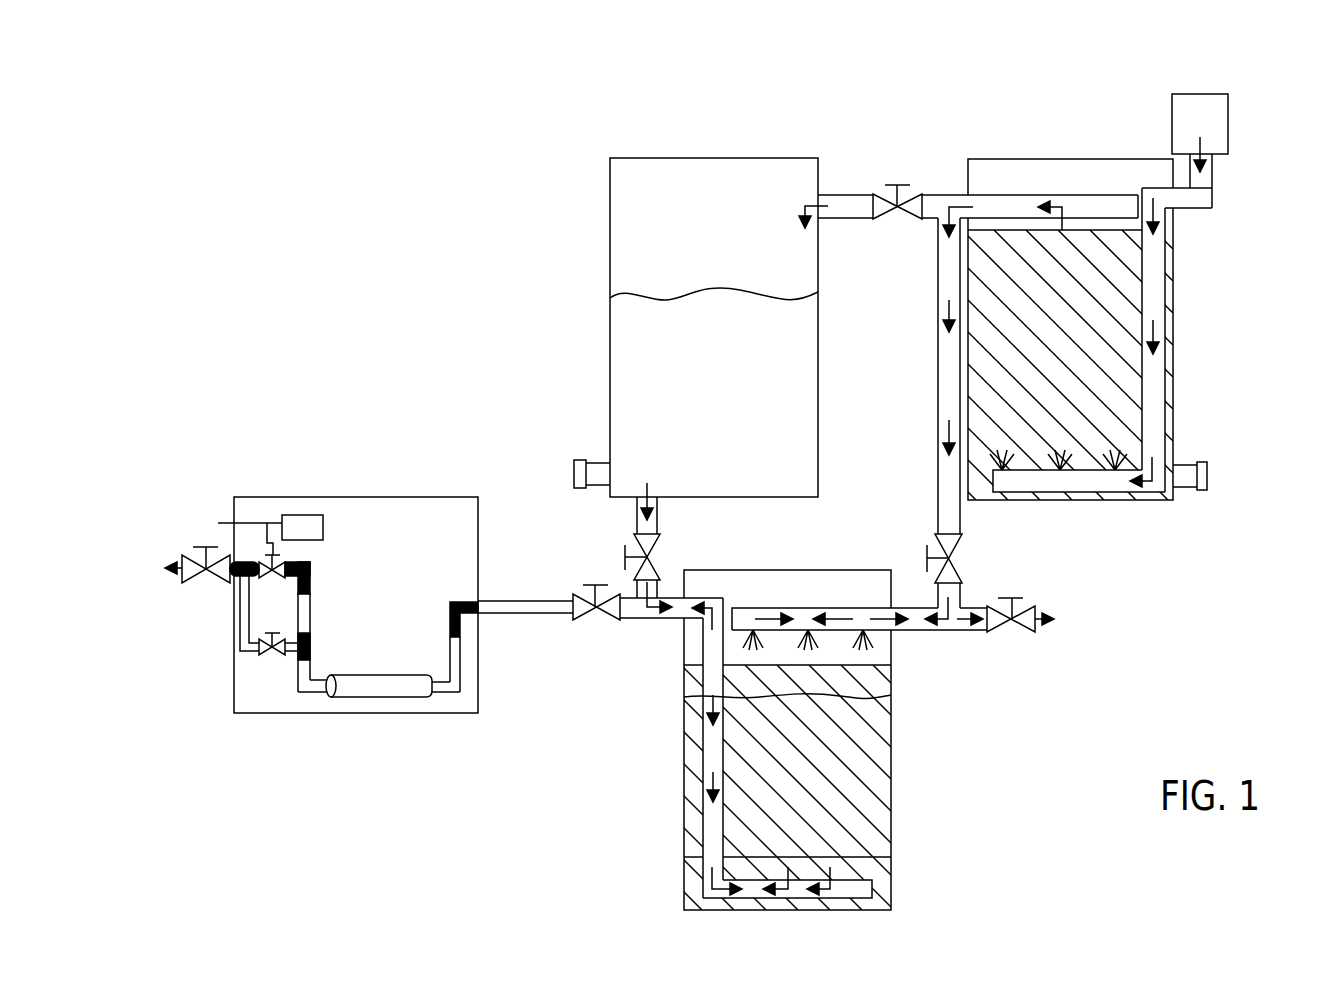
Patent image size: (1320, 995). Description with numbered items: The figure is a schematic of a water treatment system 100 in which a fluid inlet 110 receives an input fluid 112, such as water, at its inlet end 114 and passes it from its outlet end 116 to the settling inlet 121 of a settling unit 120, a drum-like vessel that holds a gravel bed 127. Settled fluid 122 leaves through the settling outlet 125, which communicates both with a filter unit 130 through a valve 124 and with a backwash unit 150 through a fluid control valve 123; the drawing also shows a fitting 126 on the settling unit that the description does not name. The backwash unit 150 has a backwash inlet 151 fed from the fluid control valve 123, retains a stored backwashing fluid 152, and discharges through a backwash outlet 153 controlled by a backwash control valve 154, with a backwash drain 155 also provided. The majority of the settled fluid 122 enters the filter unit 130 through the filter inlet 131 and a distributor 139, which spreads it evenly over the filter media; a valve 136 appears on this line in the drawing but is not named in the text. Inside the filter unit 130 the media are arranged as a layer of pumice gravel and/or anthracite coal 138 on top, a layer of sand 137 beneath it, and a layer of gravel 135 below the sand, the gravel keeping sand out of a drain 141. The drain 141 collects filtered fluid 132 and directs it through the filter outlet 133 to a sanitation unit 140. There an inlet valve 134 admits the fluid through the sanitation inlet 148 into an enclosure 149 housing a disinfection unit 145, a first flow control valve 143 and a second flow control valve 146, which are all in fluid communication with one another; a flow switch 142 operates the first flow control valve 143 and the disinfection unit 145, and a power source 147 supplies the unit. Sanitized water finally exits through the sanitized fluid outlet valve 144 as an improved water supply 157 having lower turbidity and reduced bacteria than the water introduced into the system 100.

The water treatment system 100 is at (386, 254).
The fluid inlet 110 is at (1202, 93).
The input fluid 112 is at (1200, 173).
The inlet end 114 is at (1228, 100).
The outlet end 116 is at (1232, 153).
The settling unit 120 is at (1003, 159).
The settling inlet 121 is at (1193, 210).
The settled fluid 122 is at (1056, 205).
The fluid control valve 123 is at (897, 218).
The valve 124 is at (962, 558).
The settling outlet 125 is at (945, 195).
The drain port 126 is at (1207, 477).
The gravel bed 127 is at (1170, 355).
The filter unit 130 is at (892, 752).
The filter inlet 131 is at (912, 633).
The filtered fluid 132 is at (710, 597).
The filter outlet 133 is at (647, 617).
The inlet valve 134 is at (595, 620).
The layer of gravel 135 is at (872, 869).
The outlet valve 136 is at (1012, 633).
The layer of sand 137 is at (882, 823).
The layer of pumice gravel and/or anthracite coal 138 is at (891, 695).
The distributor 139 is at (860, 607).
The sanitation unit 140 is at (384, 528).
The drain 141 is at (850, 893).
The flow switch 142 is at (218, 523).
The first flow control valve 143 is at (273, 582).
The sanitized fluid outlet valve 144 is at (208, 547).
The disinfection unit 145 is at (378, 697).
The second flow control valve 146 is at (273, 658).
The power source 147 is at (300, 515).
The sanitation inlet 148 is at (528, 613).
The enclosure 149 is at (234, 670).
The backwash unit 150 is at (713, 158).
The backwash inlet 151 is at (845, 195).
The stored backwashing fluid 152 is at (694, 384).
The backwash outlet 153 is at (637, 513).
The backwash control valve 154 is at (625, 557).
The backwash drain 155 is at (574, 471).
The improved water supply 157 is at (160, 568).